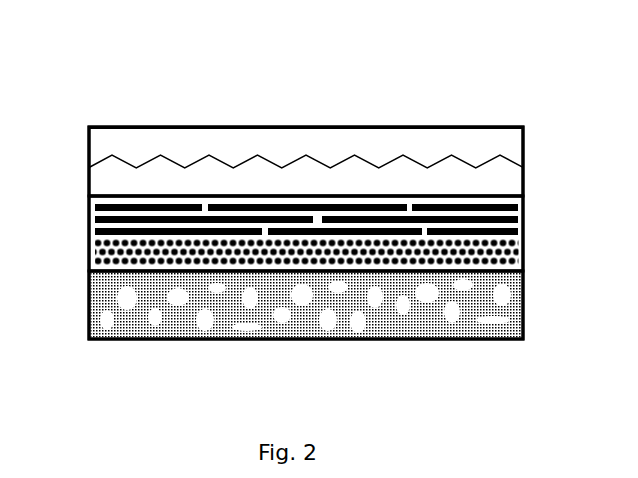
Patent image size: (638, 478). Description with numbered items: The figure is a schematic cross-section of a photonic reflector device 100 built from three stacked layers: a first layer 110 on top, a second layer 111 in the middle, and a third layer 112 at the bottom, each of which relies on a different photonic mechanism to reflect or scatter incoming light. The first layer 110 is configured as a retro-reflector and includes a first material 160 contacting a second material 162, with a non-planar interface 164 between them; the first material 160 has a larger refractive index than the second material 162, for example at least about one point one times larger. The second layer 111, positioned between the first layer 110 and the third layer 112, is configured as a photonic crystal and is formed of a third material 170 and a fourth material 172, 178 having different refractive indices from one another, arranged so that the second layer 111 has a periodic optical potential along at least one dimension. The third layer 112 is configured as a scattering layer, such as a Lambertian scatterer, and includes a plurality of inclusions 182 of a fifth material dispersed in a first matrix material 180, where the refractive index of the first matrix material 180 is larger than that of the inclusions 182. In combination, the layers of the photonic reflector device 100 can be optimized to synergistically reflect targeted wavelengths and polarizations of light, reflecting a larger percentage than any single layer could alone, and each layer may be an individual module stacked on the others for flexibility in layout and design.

The photonic reflector device 100 is at (330, 78).
The first layer 110 is at (556, 128).
The second layer 111 is at (556, 201).
The third layer 112 is at (556, 275).
The first material 160 is at (428, 142).
The second material 162 is at (98, 182).
The non-planar interface 164 is at (190, 163).
The third material 170 is at (93, 267).
The fourth material 172 is at (95, 220).
The fourth material 178 is at (92, 248).
The first matrix material 180 is at (133, 323).
The inclusions 182 is at (453, 318).